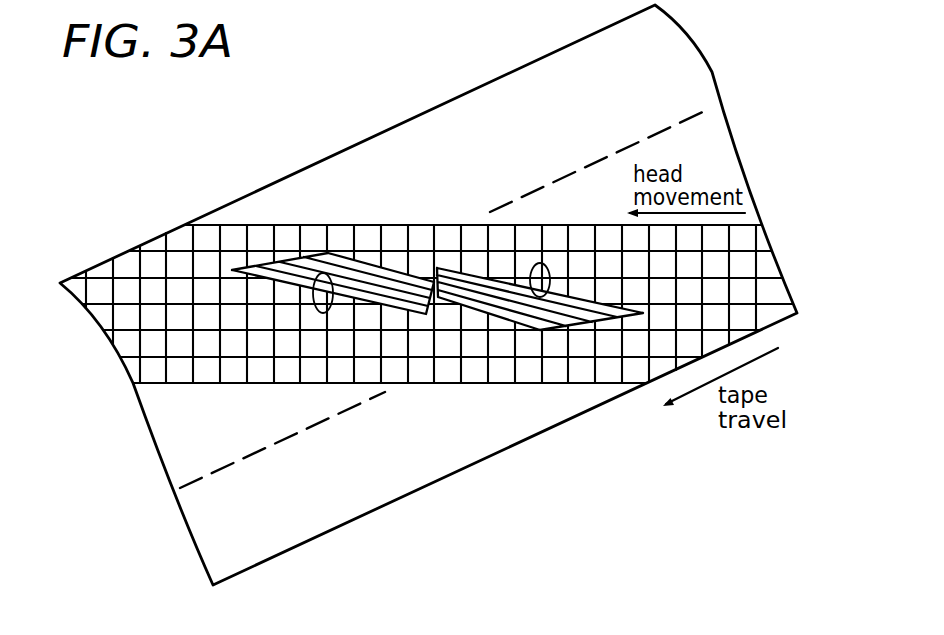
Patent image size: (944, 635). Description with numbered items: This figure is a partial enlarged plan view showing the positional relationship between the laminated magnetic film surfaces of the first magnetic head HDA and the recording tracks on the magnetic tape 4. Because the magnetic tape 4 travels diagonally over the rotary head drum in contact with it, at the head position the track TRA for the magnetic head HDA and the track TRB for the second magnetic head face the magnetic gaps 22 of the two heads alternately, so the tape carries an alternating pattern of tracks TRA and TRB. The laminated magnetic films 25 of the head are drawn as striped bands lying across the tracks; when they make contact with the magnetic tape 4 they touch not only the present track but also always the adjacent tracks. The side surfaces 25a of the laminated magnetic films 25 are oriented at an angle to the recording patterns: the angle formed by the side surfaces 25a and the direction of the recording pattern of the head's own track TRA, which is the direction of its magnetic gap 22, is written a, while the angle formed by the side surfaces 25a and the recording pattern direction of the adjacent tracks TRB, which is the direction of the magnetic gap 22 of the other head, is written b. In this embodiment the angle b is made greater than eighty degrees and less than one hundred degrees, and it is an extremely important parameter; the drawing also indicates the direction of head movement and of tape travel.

The magnetic tape 4 is at (472, 466).
The magnetic gap 22 is at (437, 314).
The laminated magnetic film 25 is at (410, 312).
The side surface of the laminated magnetic film 25a is at (333, 273).
The angle a is at (248, 298).
The angle b is at (405, 268).
The track TRA is at (167, 236).
The track TRB is at (163, 358).
The magnetic head HDA is at (614, 319).